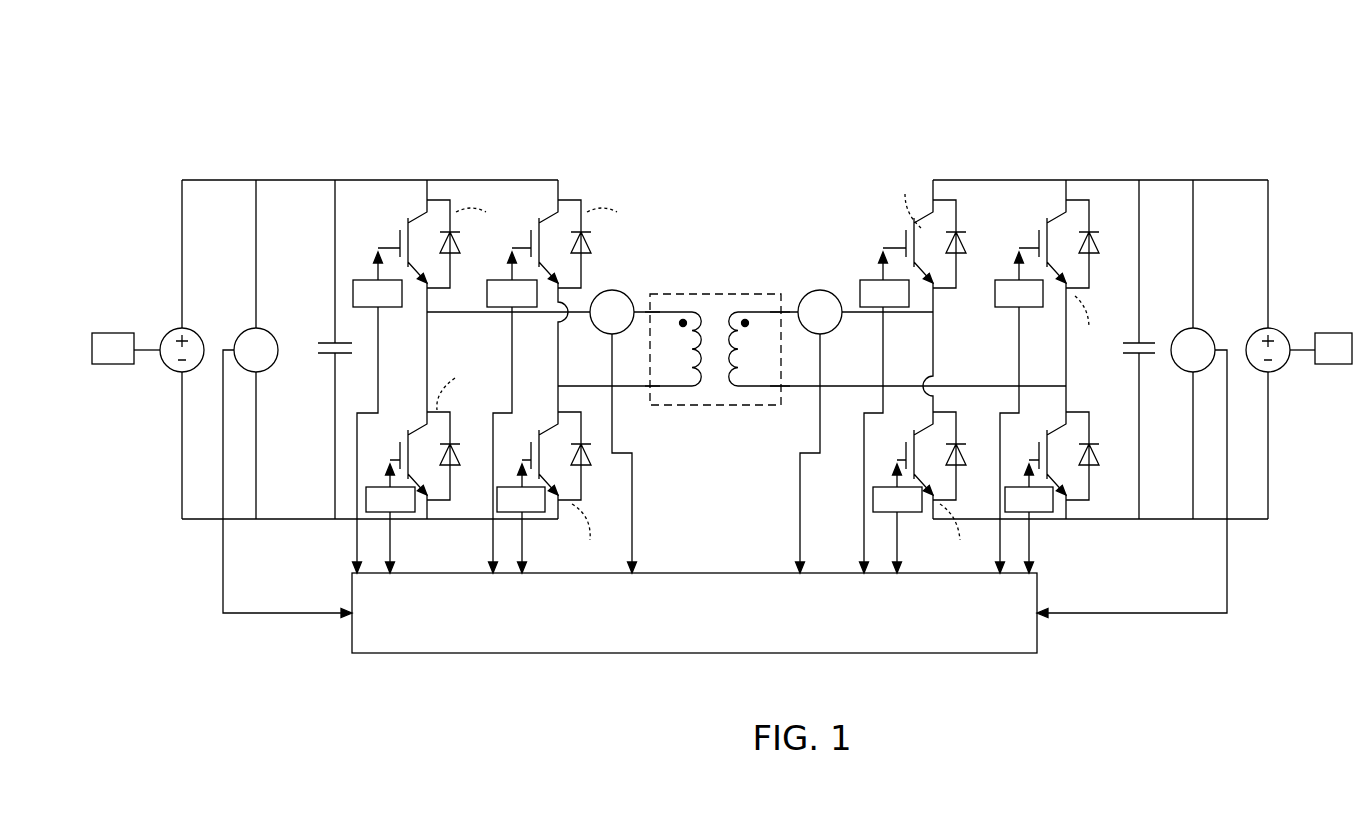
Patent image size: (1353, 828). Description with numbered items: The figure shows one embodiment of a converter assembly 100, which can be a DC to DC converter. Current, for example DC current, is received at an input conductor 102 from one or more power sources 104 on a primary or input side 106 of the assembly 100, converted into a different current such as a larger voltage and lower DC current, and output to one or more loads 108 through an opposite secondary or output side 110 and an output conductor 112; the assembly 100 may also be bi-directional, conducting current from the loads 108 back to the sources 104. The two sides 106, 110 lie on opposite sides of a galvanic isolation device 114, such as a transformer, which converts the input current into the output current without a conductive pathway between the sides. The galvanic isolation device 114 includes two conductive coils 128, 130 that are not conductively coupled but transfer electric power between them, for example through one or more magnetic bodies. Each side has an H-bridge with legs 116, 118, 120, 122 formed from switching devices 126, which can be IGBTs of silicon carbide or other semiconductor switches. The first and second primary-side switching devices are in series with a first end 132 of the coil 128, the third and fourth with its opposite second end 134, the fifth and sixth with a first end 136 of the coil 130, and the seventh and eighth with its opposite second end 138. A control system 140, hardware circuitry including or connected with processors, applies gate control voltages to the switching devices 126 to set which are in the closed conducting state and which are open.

The converter assembly 100 is at (1268, 60).
The input conductor 102 is at (198, 332).
The power sources 104 is at (110, 332).
The side 106 is at (182, 110).
The loads 108 is at (1334, 332).
The opposite side 110 is at (1268, 110).
The output conductor 112 is at (1256, 330).
The galvanic isolation device 114 is at (728, 292).
The leg 116 is at (462, 171).
The leg 118 is at (587, 171).
The leg 120 is at (977, 171).
The leg 122 is at (1108, 171).
The switching devices 126 is at (395, 203).
The conductive coil 128 is at (684, 308).
The conductive coil 130 is at (742, 392).
The first end 132 is at (645, 309).
The second end 134 is at (646, 390).
The first end 136 is at (784, 309).
The second end 138 is at (786, 390).
The control system 140 is at (694, 571).